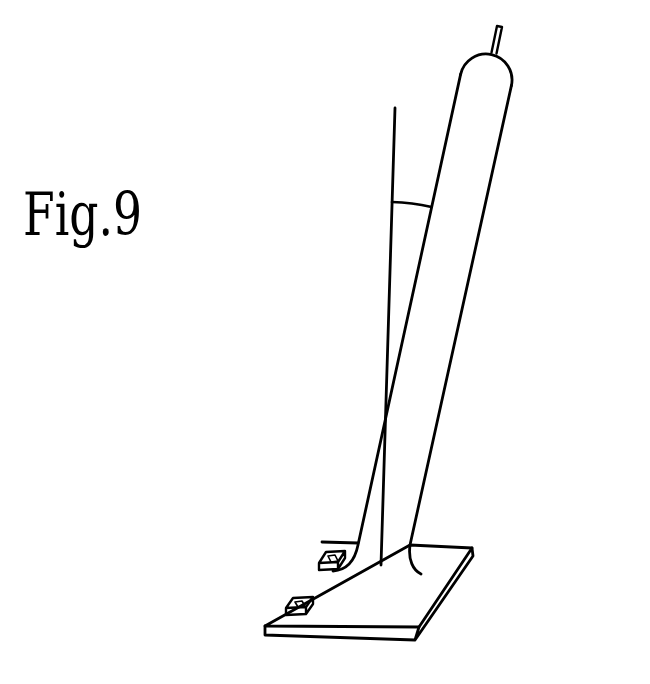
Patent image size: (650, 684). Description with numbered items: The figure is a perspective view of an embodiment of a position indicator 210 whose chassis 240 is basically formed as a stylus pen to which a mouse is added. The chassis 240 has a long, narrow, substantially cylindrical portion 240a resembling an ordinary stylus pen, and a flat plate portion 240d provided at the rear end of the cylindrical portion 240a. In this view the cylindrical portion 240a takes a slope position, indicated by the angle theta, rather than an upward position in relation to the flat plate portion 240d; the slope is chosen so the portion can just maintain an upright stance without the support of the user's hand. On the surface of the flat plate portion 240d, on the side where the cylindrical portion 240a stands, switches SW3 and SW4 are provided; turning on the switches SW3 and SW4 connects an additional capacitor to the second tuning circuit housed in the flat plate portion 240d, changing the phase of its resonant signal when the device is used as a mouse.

The indicator 210 is at (330, 197).
The chassis 240 is at (447, 382).
The cylindrical portion 240a is at (480, 250).
The flat plate portion 240d is at (445, 563).
The switch SW3 is at (288, 605).
The switch SW4 is at (340, 545).